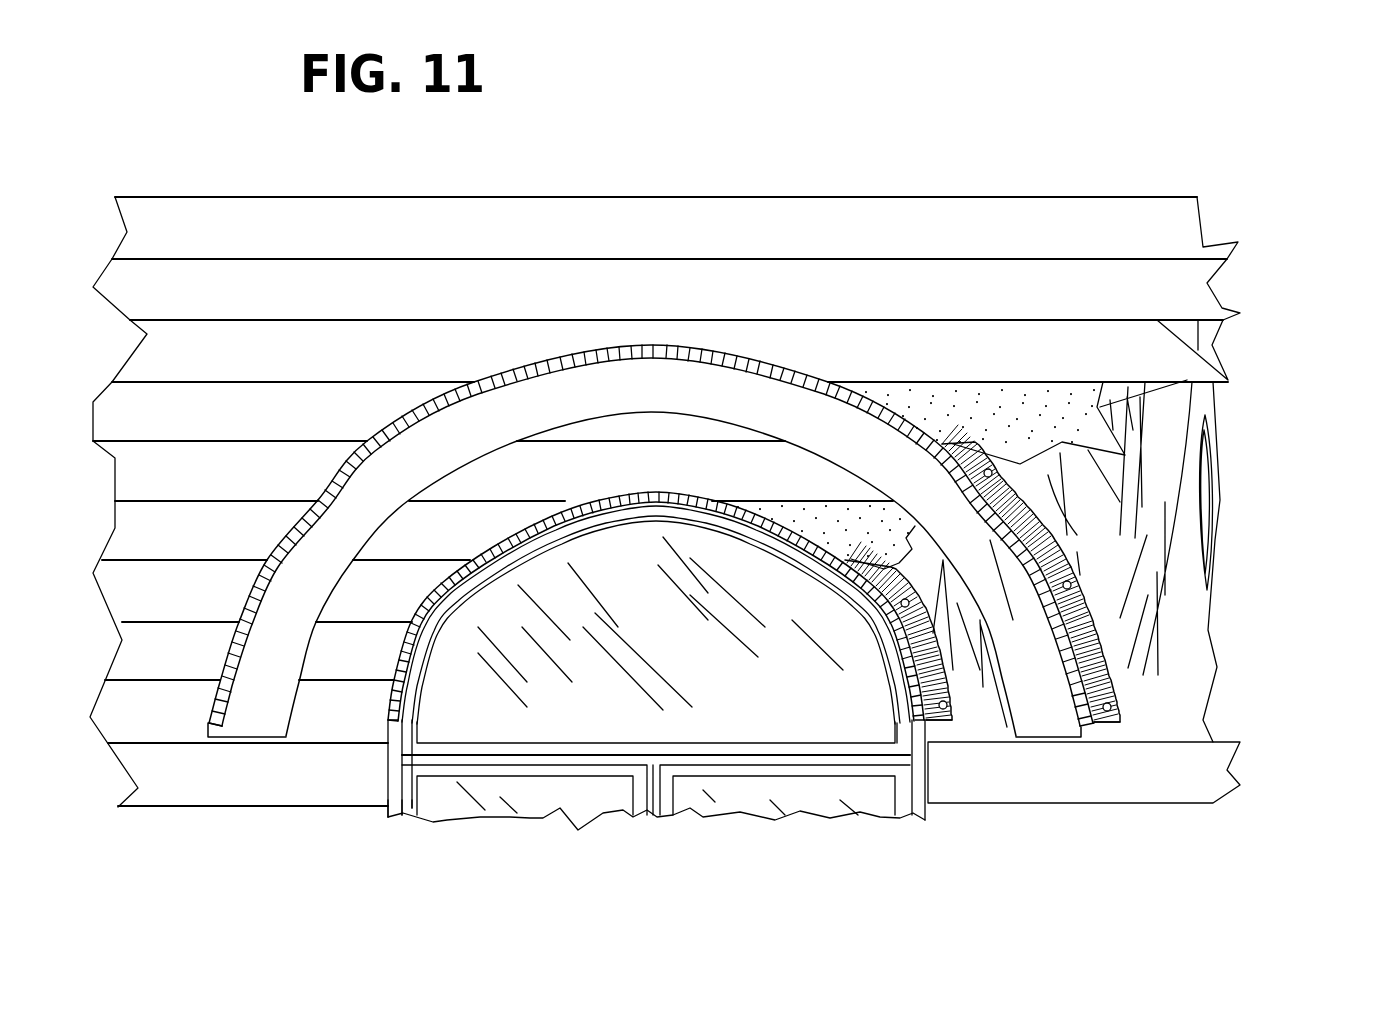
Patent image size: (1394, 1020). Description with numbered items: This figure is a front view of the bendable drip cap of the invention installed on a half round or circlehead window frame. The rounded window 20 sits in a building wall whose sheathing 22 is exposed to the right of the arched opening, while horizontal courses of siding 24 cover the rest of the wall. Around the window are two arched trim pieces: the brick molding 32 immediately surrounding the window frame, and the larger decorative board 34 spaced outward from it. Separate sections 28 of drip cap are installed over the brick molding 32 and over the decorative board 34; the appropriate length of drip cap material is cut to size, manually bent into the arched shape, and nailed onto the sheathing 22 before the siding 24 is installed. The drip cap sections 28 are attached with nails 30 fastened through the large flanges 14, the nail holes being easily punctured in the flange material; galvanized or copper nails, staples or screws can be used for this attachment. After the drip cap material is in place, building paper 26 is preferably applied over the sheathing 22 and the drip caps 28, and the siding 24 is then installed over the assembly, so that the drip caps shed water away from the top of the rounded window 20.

The large flange 14 is at (1110, 662).
The rounded window 20 is at (711, 800).
The sheathing 22 is at (1172, 483).
The siding 24 is at (1187, 228).
The building paper 26 is at (1080, 433).
The drip cap sections 28 is at (938, 722).
The nails 30 is at (1073, 583).
The brick molding 32 is at (396, 814).
The decorative board 34 is at (235, 728).